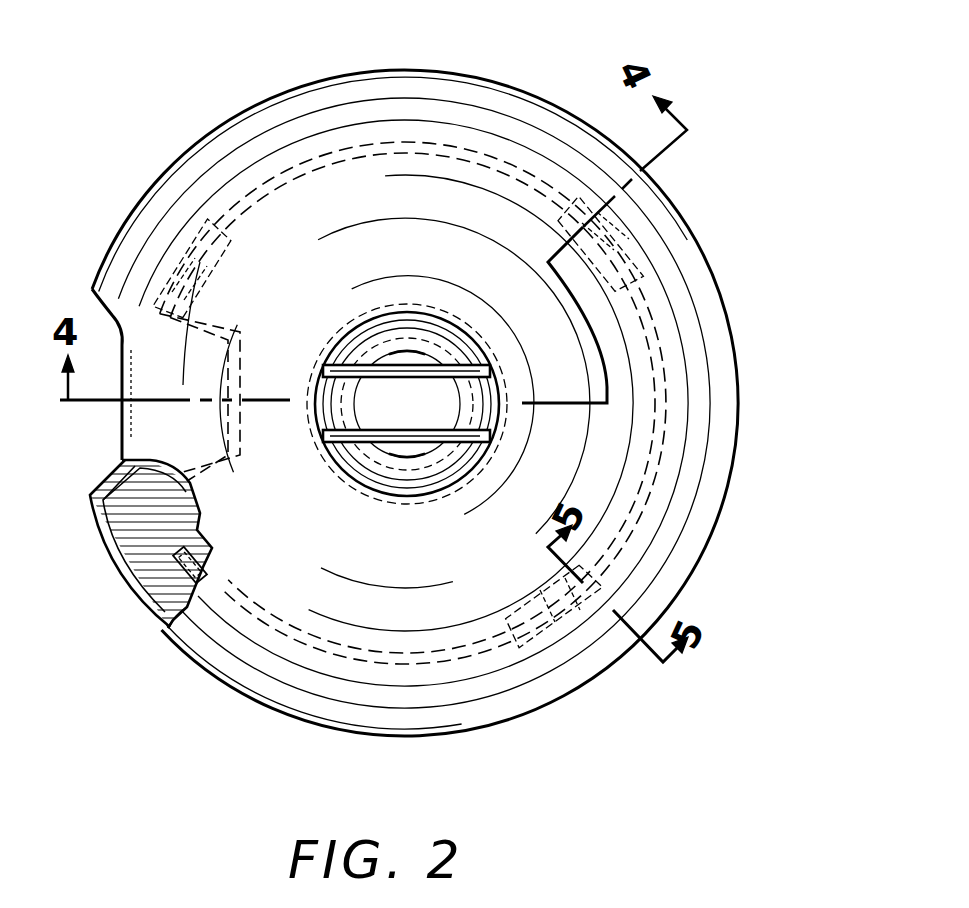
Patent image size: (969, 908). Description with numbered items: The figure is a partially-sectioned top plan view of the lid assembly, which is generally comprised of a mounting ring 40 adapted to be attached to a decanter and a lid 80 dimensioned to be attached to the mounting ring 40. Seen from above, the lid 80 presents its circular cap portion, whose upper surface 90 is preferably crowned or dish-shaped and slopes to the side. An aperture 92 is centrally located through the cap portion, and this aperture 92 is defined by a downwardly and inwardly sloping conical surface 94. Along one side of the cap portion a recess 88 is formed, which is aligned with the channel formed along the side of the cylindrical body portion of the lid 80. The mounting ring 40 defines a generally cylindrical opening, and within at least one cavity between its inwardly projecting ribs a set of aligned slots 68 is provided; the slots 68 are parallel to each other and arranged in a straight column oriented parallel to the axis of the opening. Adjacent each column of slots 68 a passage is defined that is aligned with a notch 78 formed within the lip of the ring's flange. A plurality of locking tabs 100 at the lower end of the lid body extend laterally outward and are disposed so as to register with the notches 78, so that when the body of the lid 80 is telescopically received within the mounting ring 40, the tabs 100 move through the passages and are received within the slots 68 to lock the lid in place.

The mounting ring 40 is at (742, 534).
The slots 68 is at (113, 560).
The notch 78 is at (175, 528).
The lid 80 is at (455, 137).
The recess 88 is at (117, 411).
The upper surface 90 is at (307, 290).
The aperture 92 is at (430, 403).
The conical surface 94 is at (423, 480).
The locking tabs 100 is at (160, 620).